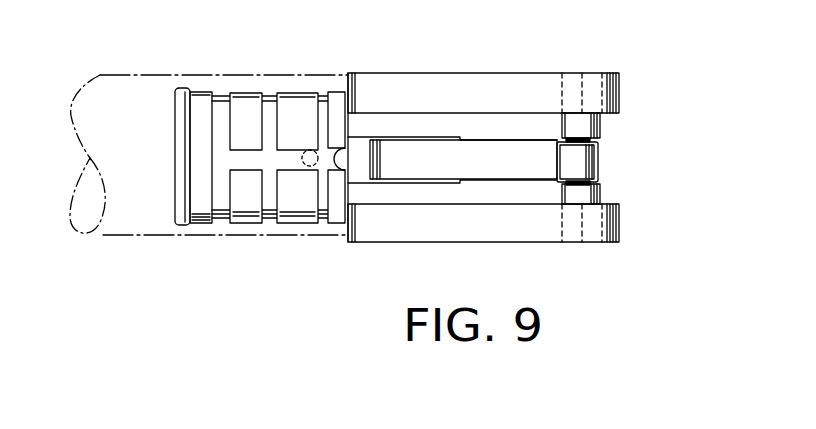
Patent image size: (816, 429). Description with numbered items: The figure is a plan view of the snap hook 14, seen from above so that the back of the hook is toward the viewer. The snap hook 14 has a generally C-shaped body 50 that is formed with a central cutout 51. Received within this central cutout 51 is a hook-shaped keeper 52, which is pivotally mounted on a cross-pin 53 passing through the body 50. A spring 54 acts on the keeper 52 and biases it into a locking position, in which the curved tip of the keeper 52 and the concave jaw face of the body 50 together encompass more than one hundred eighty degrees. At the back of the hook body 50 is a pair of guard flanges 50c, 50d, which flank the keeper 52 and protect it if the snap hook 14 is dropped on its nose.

The snap hook 14 is at (400, 40).
The body 50 is at (523, 157).
The guard flange 50c is at (480, 225).
The guard flange 50d is at (510, 90).
The central cutout 51 is at (449, 136).
The keeper 52 is at (413, 163).
The cross-pin 53 is at (570, 74).
The spring 54 is at (560, 158).